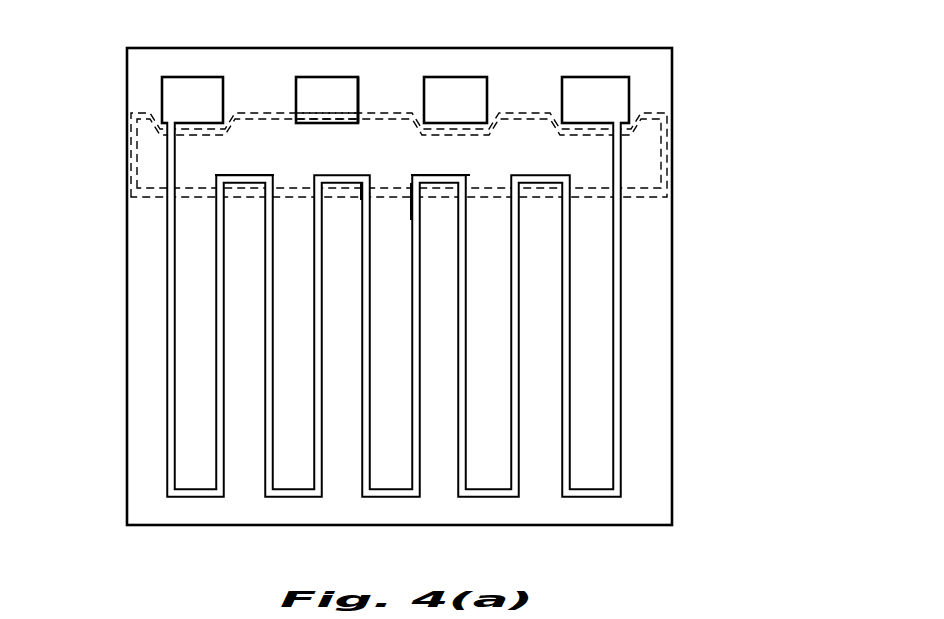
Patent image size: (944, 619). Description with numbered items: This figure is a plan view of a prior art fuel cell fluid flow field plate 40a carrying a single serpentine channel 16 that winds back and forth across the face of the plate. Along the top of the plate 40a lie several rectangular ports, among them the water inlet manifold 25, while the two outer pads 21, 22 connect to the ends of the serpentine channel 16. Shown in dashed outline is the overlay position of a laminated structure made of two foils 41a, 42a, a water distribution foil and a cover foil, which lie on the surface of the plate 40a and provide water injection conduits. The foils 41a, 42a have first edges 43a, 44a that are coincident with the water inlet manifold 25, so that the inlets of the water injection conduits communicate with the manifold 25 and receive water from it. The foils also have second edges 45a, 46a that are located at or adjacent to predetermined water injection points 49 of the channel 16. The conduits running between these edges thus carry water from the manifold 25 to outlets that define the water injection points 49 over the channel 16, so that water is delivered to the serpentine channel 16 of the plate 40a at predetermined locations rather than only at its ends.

The channels 16 is at (170, 426).
The first pad 21 is at (187, 85).
The second pad 22 is at (581, 88).
The water inlet manifold 25 is at (330, 87).
The fluid flow field plate 40a is at (648, 372).
The foil 41a is at (158, 188).
The foil 42a is at (140, 198).
The first edge 43a is at (315, 117).
The first edge 44a is at (358, 106).
The second edge 45a is at (357, 185).
The second edge 46a is at (409, 199).
The water injection points 49 is at (273, 177).